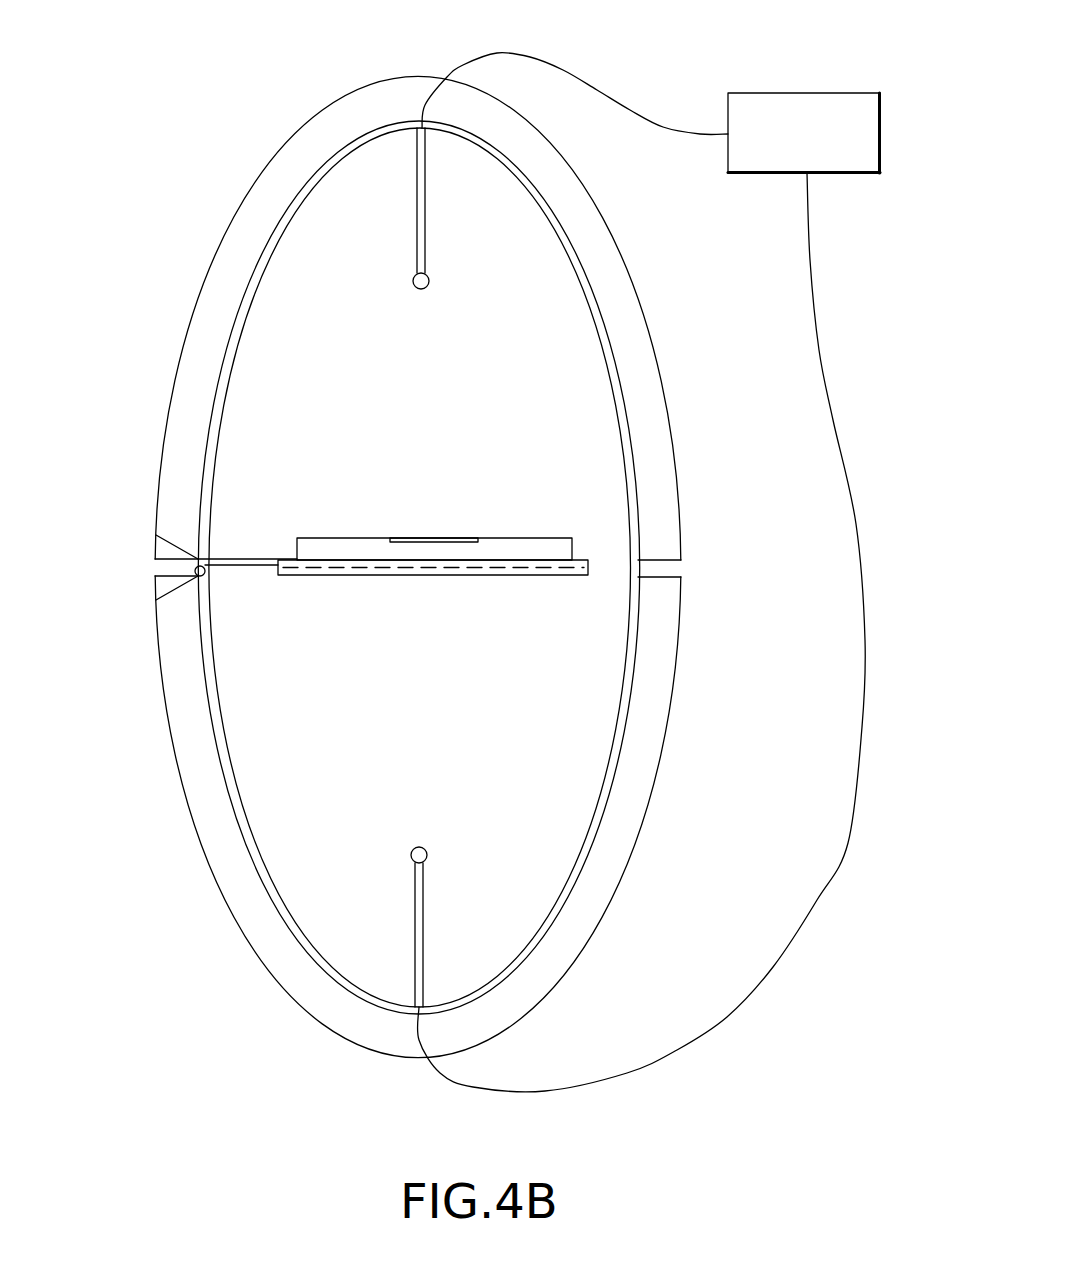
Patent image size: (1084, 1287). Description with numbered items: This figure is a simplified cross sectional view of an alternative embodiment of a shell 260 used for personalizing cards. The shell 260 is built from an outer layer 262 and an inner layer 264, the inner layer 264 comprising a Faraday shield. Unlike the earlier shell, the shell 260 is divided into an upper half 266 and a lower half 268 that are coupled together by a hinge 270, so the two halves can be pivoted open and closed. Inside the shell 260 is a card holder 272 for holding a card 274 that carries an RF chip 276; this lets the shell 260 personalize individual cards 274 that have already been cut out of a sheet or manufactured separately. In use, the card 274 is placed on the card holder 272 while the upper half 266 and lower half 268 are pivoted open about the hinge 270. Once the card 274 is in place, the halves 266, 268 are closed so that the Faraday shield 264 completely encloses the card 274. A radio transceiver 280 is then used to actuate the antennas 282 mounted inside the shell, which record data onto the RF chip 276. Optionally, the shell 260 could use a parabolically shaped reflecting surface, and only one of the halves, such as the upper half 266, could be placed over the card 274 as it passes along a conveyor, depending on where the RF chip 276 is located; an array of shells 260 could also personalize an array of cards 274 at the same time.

The shell 260 is at (421, 566).
The outer layer 262 is at (640, 342).
The inner layer 264 is at (618, 385).
The upper half 266 is at (170, 480).
The lower half 268 is at (180, 715).
The hinge 270 is at (205, 575).
The card holder 272 is at (578, 573).
The card 274 is at (547, 547).
The RF chip 276 is at (433, 538).
The radio transceiver 280 is at (833, 100).
The antennas 282 is at (428, 285).